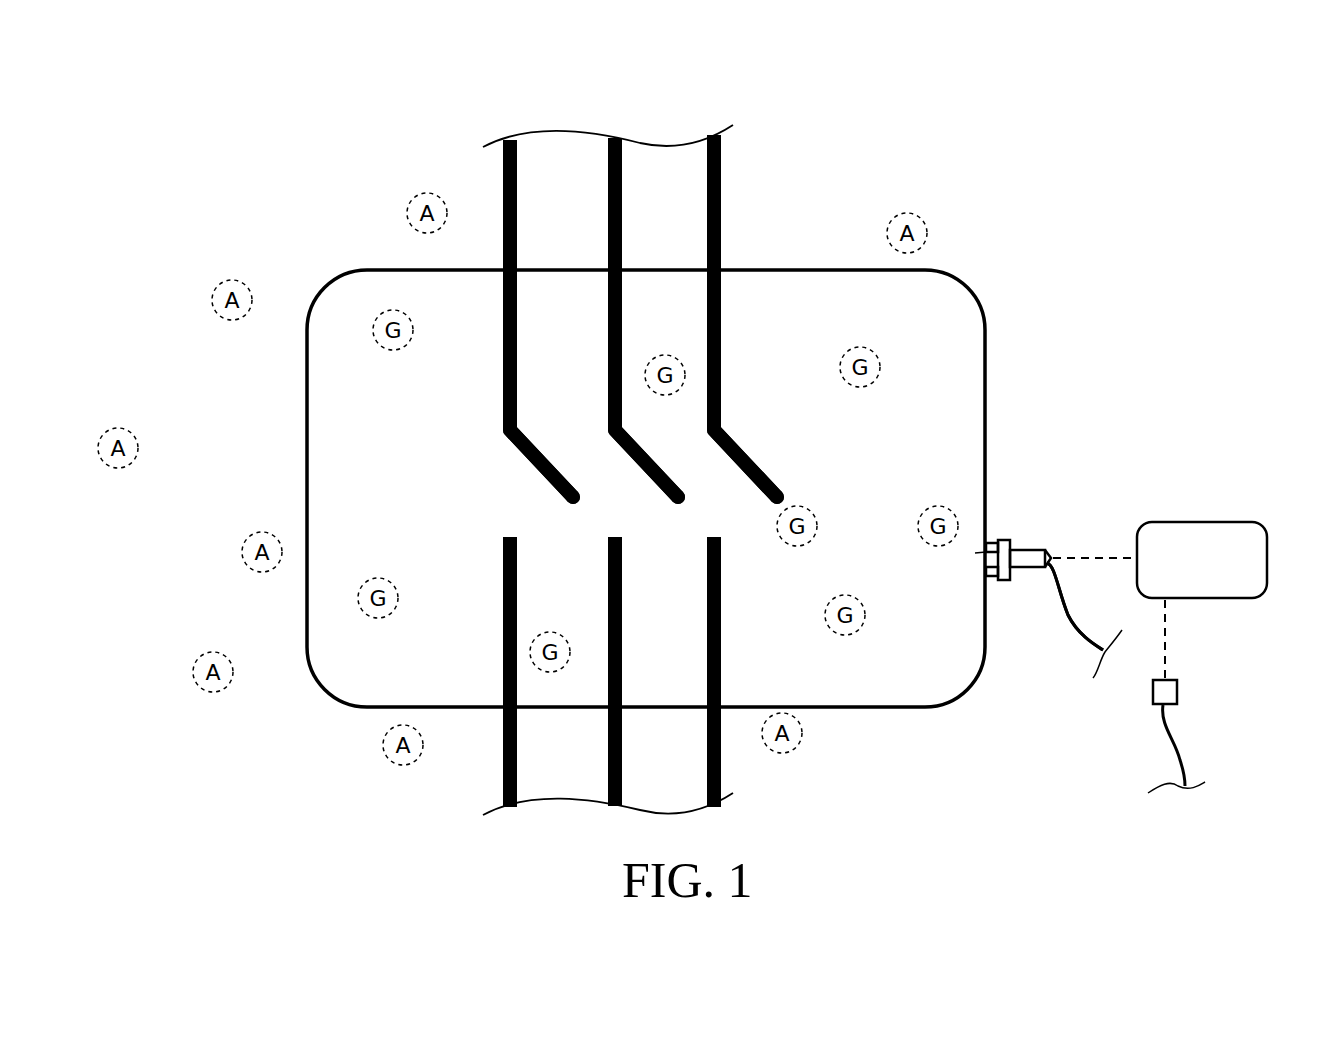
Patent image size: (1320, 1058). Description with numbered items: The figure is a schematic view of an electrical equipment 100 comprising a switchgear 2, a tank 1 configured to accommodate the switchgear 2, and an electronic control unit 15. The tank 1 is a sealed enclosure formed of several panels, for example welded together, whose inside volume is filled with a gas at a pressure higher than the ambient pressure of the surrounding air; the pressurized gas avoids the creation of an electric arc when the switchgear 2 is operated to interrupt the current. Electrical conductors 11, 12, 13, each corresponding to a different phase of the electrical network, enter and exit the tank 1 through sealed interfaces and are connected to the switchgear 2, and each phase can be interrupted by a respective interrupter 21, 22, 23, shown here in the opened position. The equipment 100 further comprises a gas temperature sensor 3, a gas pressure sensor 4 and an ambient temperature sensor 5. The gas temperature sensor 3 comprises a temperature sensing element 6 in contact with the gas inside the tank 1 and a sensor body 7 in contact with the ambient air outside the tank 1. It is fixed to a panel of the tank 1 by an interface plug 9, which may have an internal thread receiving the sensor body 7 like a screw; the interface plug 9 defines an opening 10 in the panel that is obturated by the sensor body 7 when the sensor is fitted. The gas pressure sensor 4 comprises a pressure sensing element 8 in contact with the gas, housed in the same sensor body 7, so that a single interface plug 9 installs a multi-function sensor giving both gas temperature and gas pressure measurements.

The electrical equipment 100 is at (620, 98).
The tank 1 is at (988, 362).
The switchgear 2 is at (484, 428).
The electrical conductor 11 is at (516, 232).
The electrical conductor 12 is at (621, 240).
The electrical conductor 13 is at (722, 250).
The interrupter 21 is at (545, 481).
The interrupter 22 is at (657, 490).
The interrupter 23 is at (750, 487).
The gas temperature sensor 3 is at (1031, 586).
The gas pressure sensor 4 is at (1075, 606).
The ambient temperature sensor 5 is at (1170, 695).
The temperature sensing element 6 is at (997, 578).
The sensor body 7 is at (1047, 554).
The pressure sensing element 8 is at (1013, 549).
The interface plug 9 is at (1001, 540).
The opening 10 is at (975, 553).
The electronic control unit 15 is at (1215, 555).